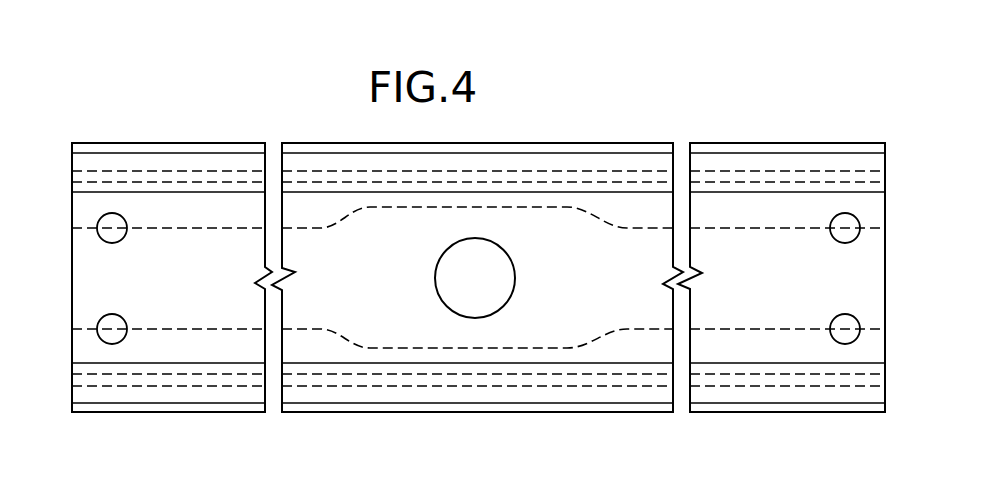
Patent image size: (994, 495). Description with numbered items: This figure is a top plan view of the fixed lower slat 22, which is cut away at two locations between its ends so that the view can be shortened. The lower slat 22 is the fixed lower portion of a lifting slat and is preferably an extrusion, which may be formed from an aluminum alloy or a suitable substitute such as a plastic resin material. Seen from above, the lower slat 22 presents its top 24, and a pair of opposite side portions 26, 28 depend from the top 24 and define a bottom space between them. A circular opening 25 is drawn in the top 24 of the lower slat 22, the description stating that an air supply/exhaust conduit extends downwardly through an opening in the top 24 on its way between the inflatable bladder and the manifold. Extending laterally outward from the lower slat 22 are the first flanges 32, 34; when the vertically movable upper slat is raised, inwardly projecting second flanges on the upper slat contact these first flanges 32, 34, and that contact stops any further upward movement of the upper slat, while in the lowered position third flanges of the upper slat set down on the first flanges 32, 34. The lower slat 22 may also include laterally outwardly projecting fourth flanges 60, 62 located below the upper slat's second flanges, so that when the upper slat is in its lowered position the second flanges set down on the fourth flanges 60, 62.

The lower slat 22 is at (66, 329).
The top 24 is at (858, 281).
The aperture 25 is at (506, 287).
The side portion 26 is at (532, 414).
The side portion 28 is at (497, 143).
The first flange 32 is at (386, 392).
The first flange 34 is at (370, 163).
The fourth flange 60 is at (440, 408).
The fourth flange 62 is at (603, 143).